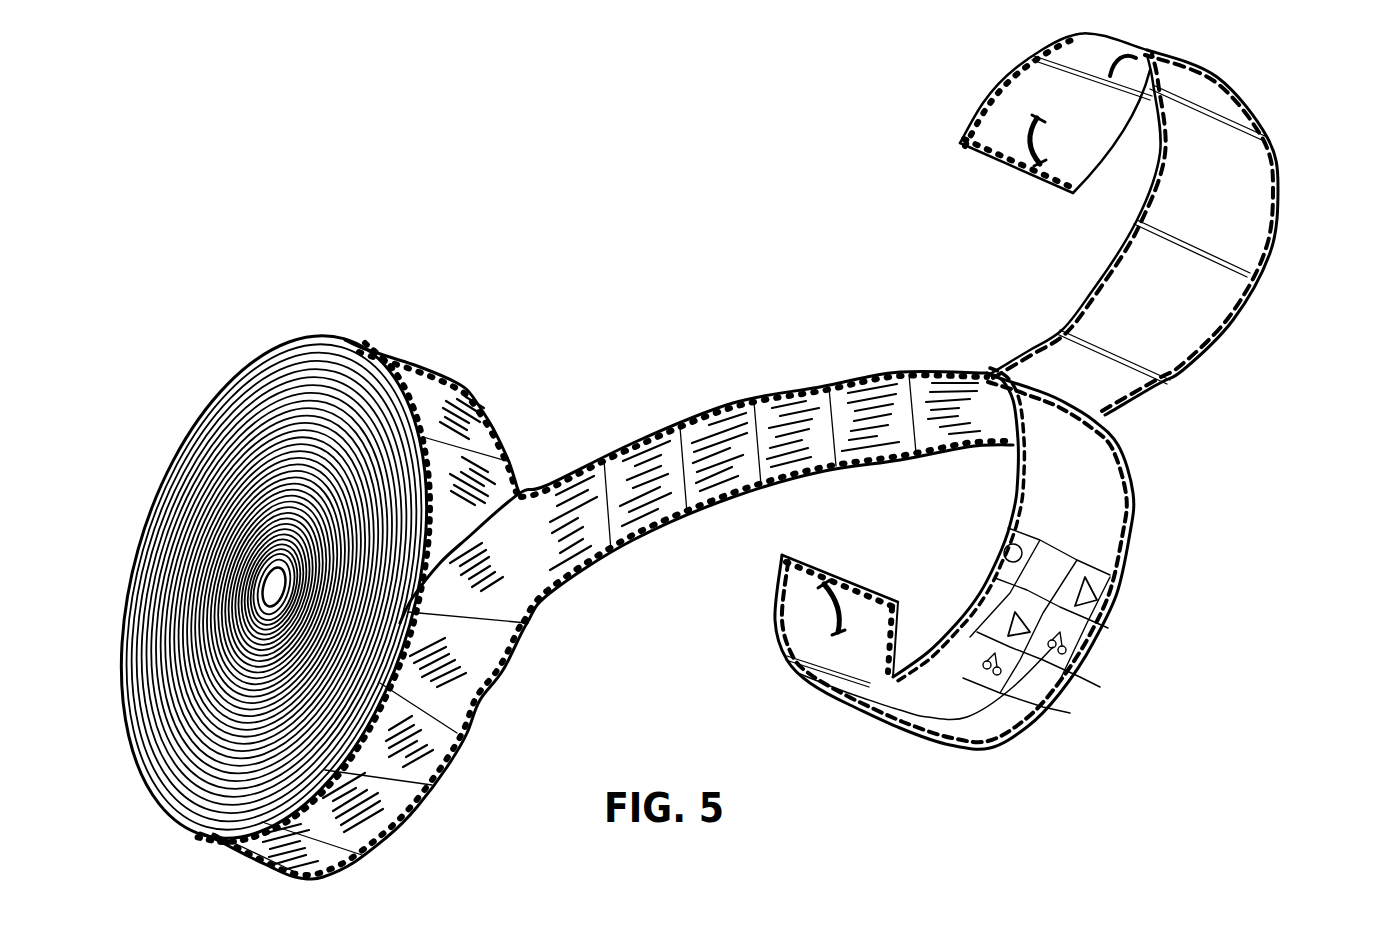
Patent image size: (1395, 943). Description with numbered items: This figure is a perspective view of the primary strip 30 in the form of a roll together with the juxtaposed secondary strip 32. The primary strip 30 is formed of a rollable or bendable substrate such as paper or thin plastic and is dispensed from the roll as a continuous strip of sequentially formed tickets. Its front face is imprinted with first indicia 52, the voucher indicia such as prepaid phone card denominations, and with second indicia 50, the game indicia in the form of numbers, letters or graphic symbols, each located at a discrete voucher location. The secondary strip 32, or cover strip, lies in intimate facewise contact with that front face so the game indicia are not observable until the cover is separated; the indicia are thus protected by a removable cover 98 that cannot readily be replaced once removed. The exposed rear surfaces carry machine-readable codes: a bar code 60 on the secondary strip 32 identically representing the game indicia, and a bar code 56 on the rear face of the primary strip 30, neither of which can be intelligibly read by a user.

The removable cover 98 is at (1310, 104).
The bar code 60 is at (858, 400).
The first indicia 52 is at (1105, 300).
The bar code 56 is at (1196, 340).
The secondary strip 32 is at (1003, 148).
The primary strip 30 is at (855, 595).
The second indicia 50 is at (1003, 556).